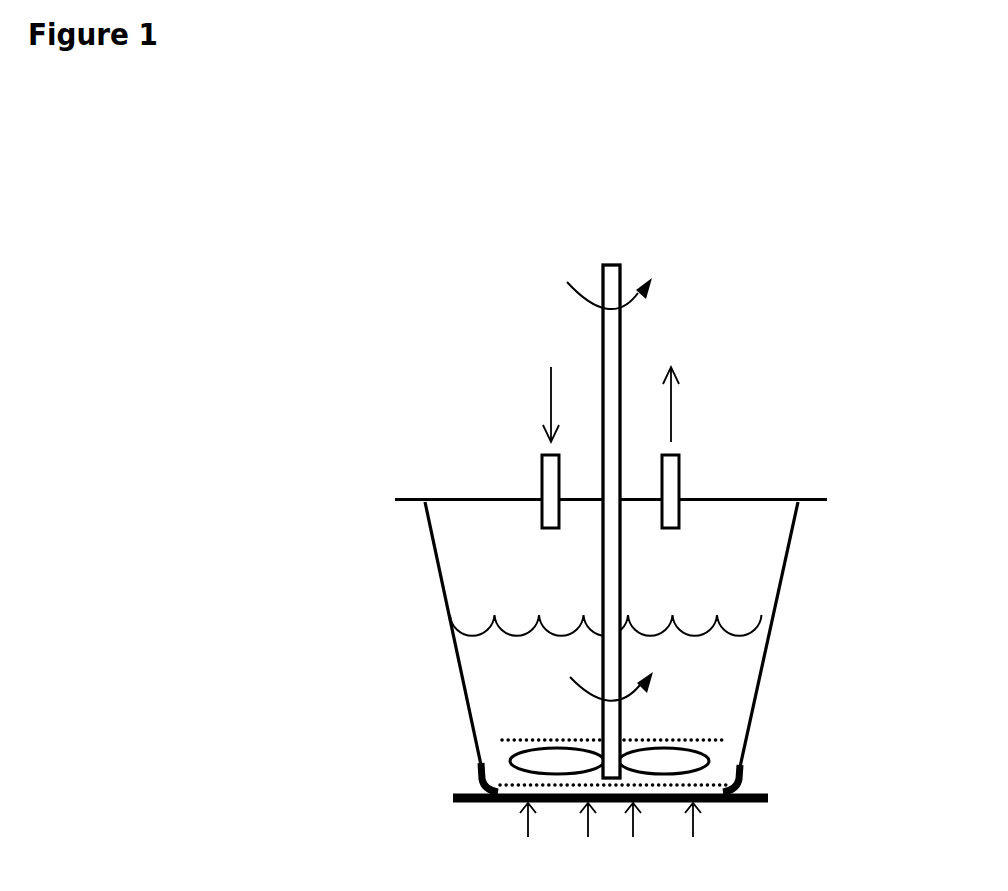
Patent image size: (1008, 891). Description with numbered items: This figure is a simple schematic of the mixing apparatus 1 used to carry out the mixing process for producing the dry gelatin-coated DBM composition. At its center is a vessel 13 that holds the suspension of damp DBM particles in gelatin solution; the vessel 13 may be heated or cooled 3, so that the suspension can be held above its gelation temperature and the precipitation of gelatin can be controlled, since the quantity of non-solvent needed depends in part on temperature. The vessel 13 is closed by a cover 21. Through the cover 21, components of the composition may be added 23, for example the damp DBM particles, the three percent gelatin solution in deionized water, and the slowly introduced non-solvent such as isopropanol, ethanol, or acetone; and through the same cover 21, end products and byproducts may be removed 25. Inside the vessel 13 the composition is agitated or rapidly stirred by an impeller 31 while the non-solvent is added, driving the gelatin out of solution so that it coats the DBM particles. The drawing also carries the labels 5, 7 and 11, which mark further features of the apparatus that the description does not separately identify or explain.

The reaction vessel 1 is at (772, 613).
The heating or cooling 3 is at (610, 838).
The impeller level line 5 is at (498, 740).
The liquid surface 7 is at (498, 645).
The vessel bottom corner (right) 11 is at (752, 781).
The vessel 13 is at (481, 780).
The cover 21 is at (484, 499).
The component addition 23 is at (553, 422).
The product and byproduct removal 25 is at (674, 422).
The impeller 31 is at (602, 720).